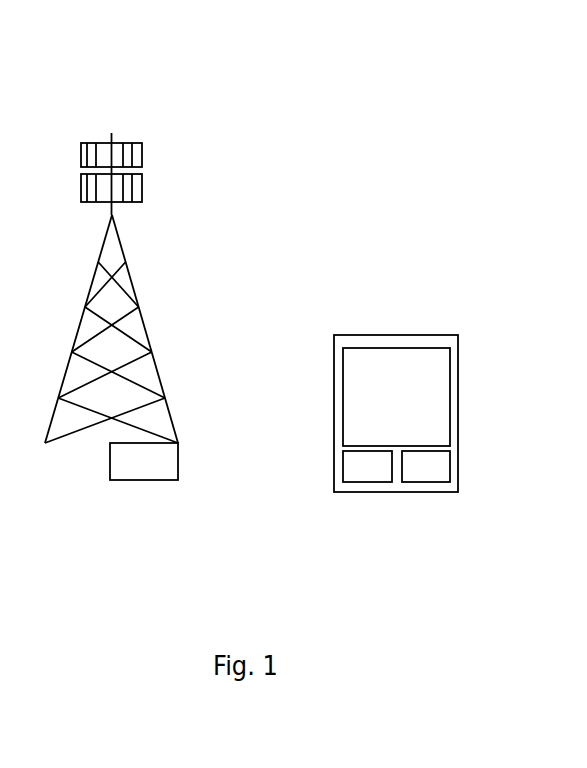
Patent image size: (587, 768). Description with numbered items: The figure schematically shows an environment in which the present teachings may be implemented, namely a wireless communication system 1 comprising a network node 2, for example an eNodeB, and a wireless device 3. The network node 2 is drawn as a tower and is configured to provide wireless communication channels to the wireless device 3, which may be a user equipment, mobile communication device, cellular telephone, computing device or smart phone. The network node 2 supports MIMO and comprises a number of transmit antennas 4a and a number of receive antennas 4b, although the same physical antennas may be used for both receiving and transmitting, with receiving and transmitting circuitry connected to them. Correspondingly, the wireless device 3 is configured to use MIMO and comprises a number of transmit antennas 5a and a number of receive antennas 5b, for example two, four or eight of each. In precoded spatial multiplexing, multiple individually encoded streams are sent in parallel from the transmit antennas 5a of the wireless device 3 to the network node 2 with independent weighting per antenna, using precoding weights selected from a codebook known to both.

The wireless communication system 1 is at (371, 78).
The network node 2 is at (142, 480).
The wireless device 3 is at (453, 342).
The transmit antennas 4a is at (143, 155).
The receive antennas 4b is at (143, 185).
The transmit antennas 5a is at (343, 469).
The receive antennas 5b is at (450, 469).